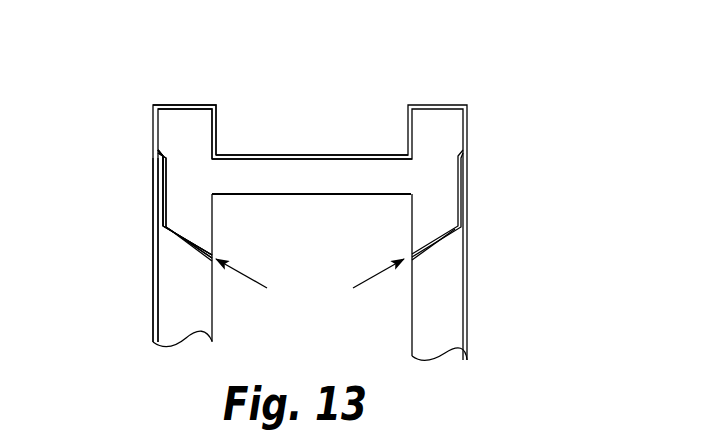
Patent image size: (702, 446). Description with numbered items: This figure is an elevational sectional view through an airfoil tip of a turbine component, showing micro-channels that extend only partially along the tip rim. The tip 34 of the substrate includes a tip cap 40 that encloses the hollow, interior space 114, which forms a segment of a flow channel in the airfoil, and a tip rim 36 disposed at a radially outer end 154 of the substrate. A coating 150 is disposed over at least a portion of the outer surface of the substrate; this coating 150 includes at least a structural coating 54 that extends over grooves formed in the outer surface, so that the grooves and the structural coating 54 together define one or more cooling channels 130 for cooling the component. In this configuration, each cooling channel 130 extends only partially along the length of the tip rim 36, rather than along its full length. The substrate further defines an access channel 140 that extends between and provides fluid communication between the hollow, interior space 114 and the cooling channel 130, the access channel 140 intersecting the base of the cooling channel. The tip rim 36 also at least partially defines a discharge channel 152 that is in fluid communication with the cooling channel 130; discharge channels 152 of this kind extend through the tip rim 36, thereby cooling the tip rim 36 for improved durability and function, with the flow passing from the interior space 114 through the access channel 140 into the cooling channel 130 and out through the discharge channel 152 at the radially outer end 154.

The tip 34 is at (504, 94).
The tip rim 36 is at (200, 120).
The tip cap 40 is at (313, 154).
The hollow, interior space 114 is at (237, 315).
The coating 150 is at (158, 250).
The structural coating 54 is at (128, 283).
The access channel 140 is at (195, 253).
The cooling channel 130 is at (158, 187).
The discharge channel 152 is at (157, 160).
The radially outer end 154 is at (424, 156).